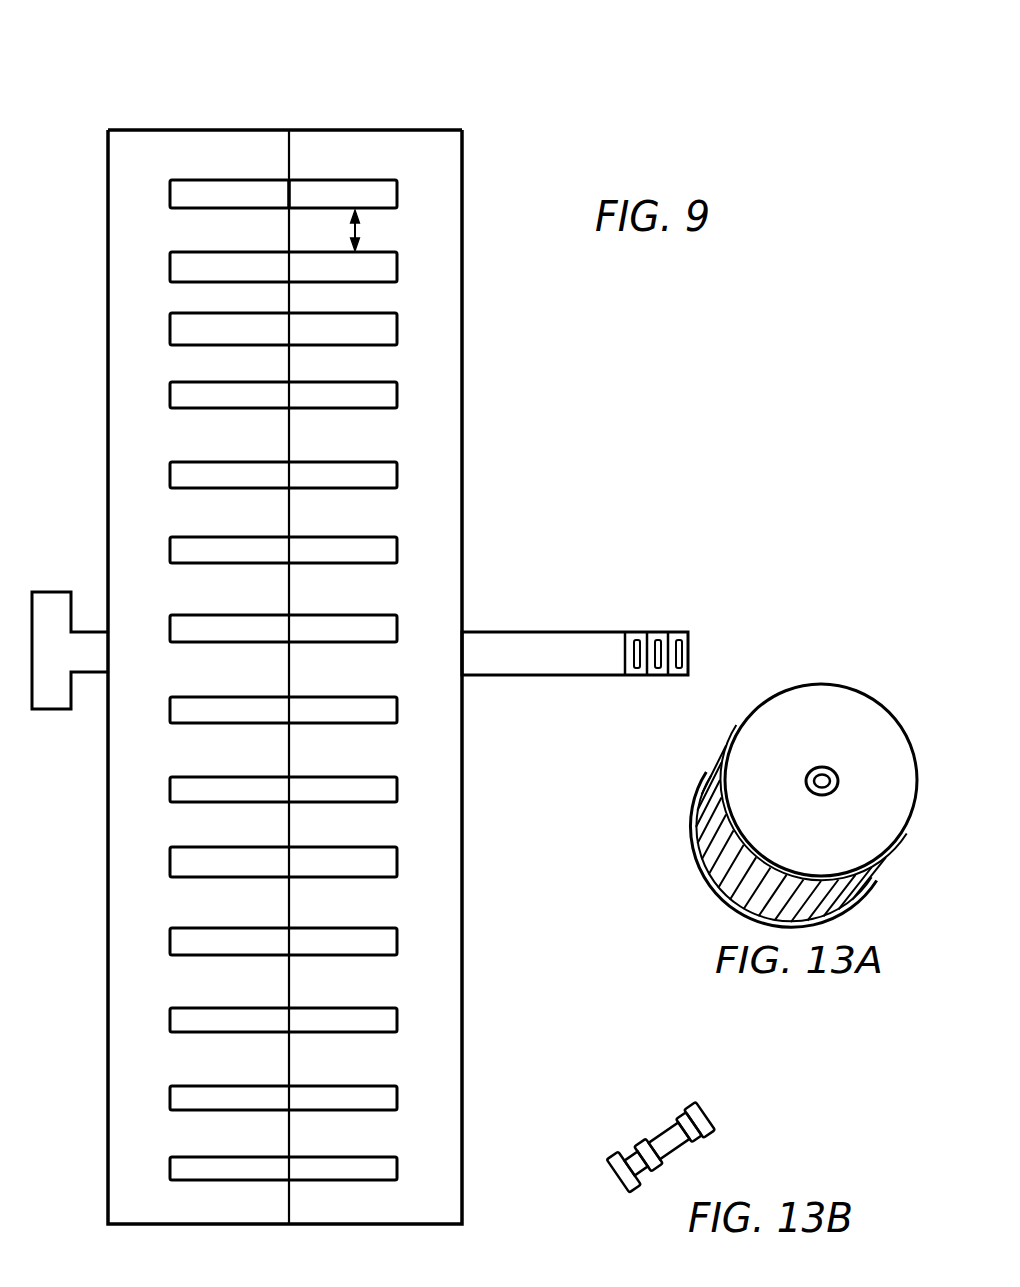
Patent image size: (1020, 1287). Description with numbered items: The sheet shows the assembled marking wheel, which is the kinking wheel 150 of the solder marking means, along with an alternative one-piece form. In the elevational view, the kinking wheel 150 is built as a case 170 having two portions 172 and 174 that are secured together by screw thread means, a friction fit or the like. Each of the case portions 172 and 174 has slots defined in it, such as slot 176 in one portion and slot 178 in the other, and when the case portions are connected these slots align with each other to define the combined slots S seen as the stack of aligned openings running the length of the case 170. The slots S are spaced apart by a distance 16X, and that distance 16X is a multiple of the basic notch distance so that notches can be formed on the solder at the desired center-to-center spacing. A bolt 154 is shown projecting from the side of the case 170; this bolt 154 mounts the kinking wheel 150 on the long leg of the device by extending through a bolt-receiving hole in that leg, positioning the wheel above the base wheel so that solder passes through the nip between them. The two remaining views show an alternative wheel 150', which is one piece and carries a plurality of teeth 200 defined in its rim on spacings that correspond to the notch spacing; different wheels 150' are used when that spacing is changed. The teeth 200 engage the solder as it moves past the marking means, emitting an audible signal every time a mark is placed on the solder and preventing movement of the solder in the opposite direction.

In FIG. 9, the kinking wheel 150 is at (357, 620).
In FIG. 9, the case 170 is at (472, 488).
In FIG. 9, the case portion 172 is at (338, 130).
In FIG. 9, the case portion 174 is at (217, 130).
In FIG. 9, the slot 176 is at (345, 190).
In FIG. 9, the slot 178 is at (220, 190).
In FIG. 9, the distance 16X is at (357, 231).
In FIG. 9, the slots S is at (216, 530).
In FIG. 9, the bolt 154 is at (49, 582).
In FIG. 13A, the wheel 150' is at (803, 781).
In FIG. 13B, the teeth 200 is at (652, 1122).